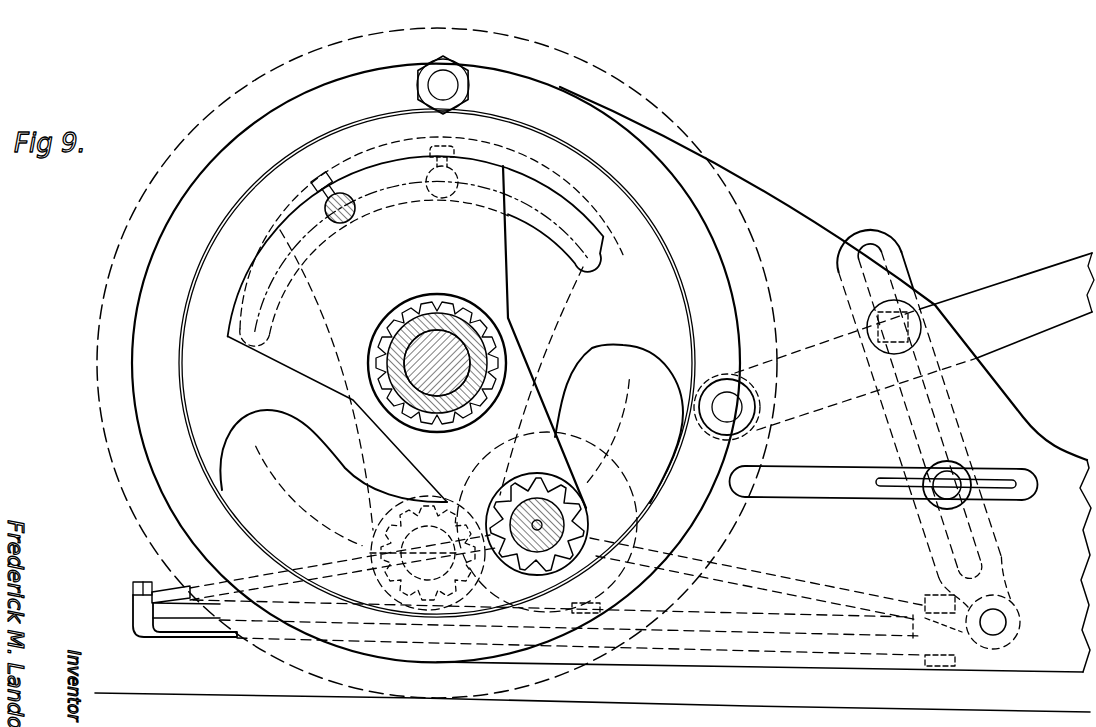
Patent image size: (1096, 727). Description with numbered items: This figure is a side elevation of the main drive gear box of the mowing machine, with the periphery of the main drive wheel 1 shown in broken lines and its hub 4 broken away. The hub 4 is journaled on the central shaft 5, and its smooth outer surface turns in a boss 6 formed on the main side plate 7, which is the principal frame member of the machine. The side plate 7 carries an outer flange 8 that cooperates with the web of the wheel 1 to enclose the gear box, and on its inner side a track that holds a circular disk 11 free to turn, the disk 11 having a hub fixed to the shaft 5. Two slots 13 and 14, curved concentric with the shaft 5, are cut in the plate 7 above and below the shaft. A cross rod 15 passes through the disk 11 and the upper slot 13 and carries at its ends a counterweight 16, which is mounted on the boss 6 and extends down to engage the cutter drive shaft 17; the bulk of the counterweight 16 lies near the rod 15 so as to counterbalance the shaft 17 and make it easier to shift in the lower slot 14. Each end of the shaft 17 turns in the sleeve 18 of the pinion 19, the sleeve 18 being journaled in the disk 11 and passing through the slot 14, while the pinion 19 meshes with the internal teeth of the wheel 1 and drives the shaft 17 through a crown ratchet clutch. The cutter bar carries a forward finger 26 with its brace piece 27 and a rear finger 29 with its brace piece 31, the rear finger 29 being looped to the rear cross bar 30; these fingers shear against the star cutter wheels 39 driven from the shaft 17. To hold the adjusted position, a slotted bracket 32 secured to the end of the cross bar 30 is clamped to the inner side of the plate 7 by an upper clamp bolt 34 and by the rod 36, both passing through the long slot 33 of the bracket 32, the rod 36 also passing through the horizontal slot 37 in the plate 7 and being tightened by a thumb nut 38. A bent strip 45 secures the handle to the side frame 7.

The main drive wheel 1 is at (636, 98).
The hub 4 is at (478, 342).
The central shaft 5 is at (412, 346).
The boss 6 is at (500, 348).
The main side plate 7 is at (593, 504).
The outer flange 8 is at (436, 359).
The circular disk 11 is at (443, 380).
The upper slot 13 is at (598, 262).
The lower slot 14 is at (641, 360).
The cross rod 15 is at (352, 214).
The counterweight 16 is at (407, 388).
The cutter drive shaft 17 is at (580, 497).
The sleeve 18 is at (582, 523).
The pinion 19 is at (561, 484).
The forward-extending finger 26 is at (176, 640).
The brace piece 27 is at (152, 585).
The rearward extending finger 29 is at (833, 652).
The rear cross bar 30 is at (1008, 628).
The brace piece 31 is at (826, 590).
The slotted bracket 32 is at (946, 400).
The long slot 33 is at (878, 263).
The upper clamp bolt 34 is at (906, 330).
The rod 36 is at (958, 482).
The horizontal slot 37 is at (808, 478).
The clamping thumb nut 38 is at (1006, 492).
The cutter wheel 39 is at (712, 626).
The bent strip 45 is at (894, 346).